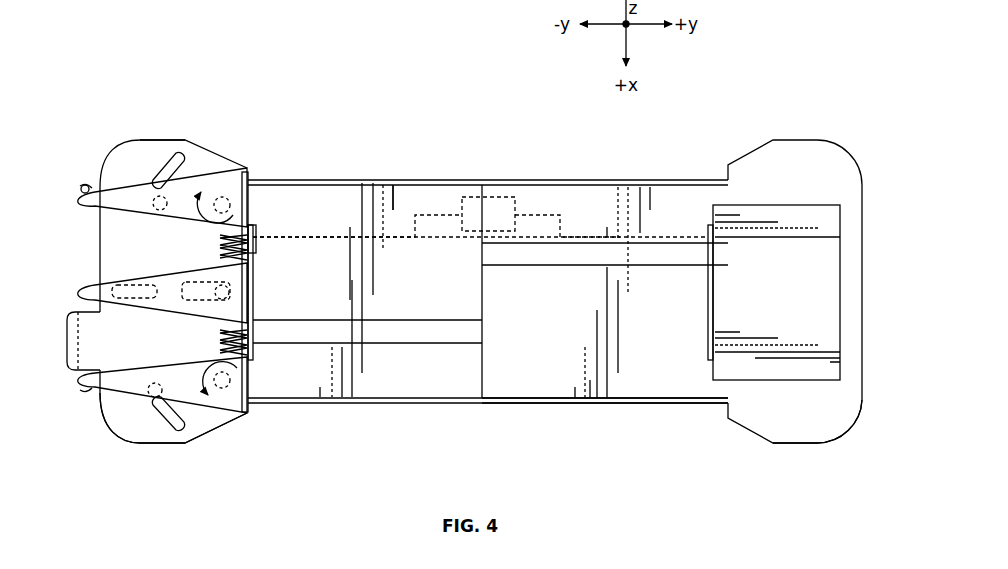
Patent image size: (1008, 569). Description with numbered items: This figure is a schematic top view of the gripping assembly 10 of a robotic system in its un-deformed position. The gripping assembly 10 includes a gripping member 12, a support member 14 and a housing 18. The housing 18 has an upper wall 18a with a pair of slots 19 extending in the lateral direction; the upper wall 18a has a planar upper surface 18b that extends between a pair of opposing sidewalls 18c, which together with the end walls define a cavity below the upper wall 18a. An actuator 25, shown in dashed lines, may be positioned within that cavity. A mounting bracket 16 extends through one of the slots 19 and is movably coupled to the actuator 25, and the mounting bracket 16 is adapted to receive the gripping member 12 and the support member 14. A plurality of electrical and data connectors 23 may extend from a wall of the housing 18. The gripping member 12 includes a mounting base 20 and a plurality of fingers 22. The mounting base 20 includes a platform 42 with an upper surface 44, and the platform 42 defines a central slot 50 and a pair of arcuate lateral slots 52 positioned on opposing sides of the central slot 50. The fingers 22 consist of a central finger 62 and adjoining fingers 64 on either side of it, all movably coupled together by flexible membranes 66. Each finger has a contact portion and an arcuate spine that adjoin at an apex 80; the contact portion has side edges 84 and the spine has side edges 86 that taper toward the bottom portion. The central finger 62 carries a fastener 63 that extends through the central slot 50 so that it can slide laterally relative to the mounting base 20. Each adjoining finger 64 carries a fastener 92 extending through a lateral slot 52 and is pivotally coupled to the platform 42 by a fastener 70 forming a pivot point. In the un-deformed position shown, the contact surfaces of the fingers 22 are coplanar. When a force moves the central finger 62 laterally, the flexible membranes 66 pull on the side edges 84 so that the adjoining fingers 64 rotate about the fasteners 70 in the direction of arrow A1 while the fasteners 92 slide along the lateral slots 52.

The gripping assembly 10 is at (306, 93).
The gripping member 12 is at (84, 163).
The support member 14 is at (850, 142).
The mounting bracket 16 is at (252, 247).
The housing 18 is at (362, 405).
The upper wall 18a is at (576, 205).
The upper surface 18b is at (668, 388).
The opposing sidewalls 18c is at (394, 182).
The slots 19 is at (578, 266).
The mounting base 20 is at (105, 430).
The fingers 22 is at (200, 410).
The electrical and data connectors 23 is at (62, 345).
The actuator 25 is at (491, 186).
The platform 42 is at (140, 445).
The upper surface 44 is at (133, 432).
The central slot 50 is at (180, 272).
The lateral slots 52 is at (158, 180).
The central finger 62 is at (70, 285).
The fastener 63 is at (254, 290).
The adjoining fingers 64 is at (83, 190).
The flexible membranes 66 is at (220, 242).
The fastener 70 is at (224, 198).
The apex 80 is at (68, 202).
The side edges 84 is at (268, 237).
The side edges 86 is at (83, 212).
The fastener 92 is at (150, 197).
The arrow A1 is at (200, 193).